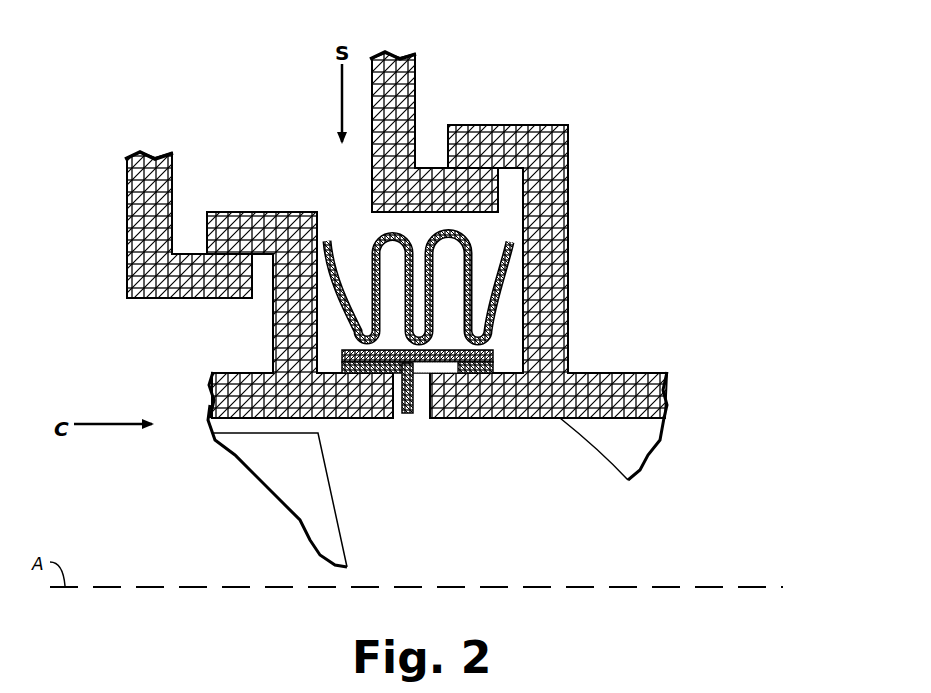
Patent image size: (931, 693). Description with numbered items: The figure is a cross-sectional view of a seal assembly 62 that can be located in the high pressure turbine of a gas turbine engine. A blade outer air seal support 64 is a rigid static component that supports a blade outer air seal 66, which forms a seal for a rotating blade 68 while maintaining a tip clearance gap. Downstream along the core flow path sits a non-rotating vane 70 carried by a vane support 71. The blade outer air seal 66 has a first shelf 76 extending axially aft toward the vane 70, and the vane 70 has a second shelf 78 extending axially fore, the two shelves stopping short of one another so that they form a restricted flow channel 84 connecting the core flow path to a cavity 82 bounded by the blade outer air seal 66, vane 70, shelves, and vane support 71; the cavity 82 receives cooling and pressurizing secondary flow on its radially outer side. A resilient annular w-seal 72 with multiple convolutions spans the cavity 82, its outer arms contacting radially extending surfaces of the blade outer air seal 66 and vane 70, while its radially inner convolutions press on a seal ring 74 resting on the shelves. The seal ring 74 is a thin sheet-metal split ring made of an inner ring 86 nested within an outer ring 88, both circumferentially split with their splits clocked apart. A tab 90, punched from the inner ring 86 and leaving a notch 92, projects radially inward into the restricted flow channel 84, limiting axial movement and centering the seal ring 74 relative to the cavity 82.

The seal assembly 62 is at (158, 78).
The blade outer air seal support 64 is at (188, 225).
The blade outer air seal 66 is at (300, 276).
The blade 68 is at (278, 462).
The vane 70 is at (548, 263).
The vane support 71 is at (434, 132).
The w-seal 72 is at (512, 240).
The seal ring 74 is at (489, 363).
The first shelf 76 is at (300, 315).
The second shelf 78 is at (548, 302).
The cavity 82 is at (521, 235).
The restricted flow channel 84 is at (430, 425).
The inner ring 86 is at (498, 367).
The outer ring 88 is at (498, 356).
The tab 90 is at (414, 396).
The notch 92 is at (440, 364).